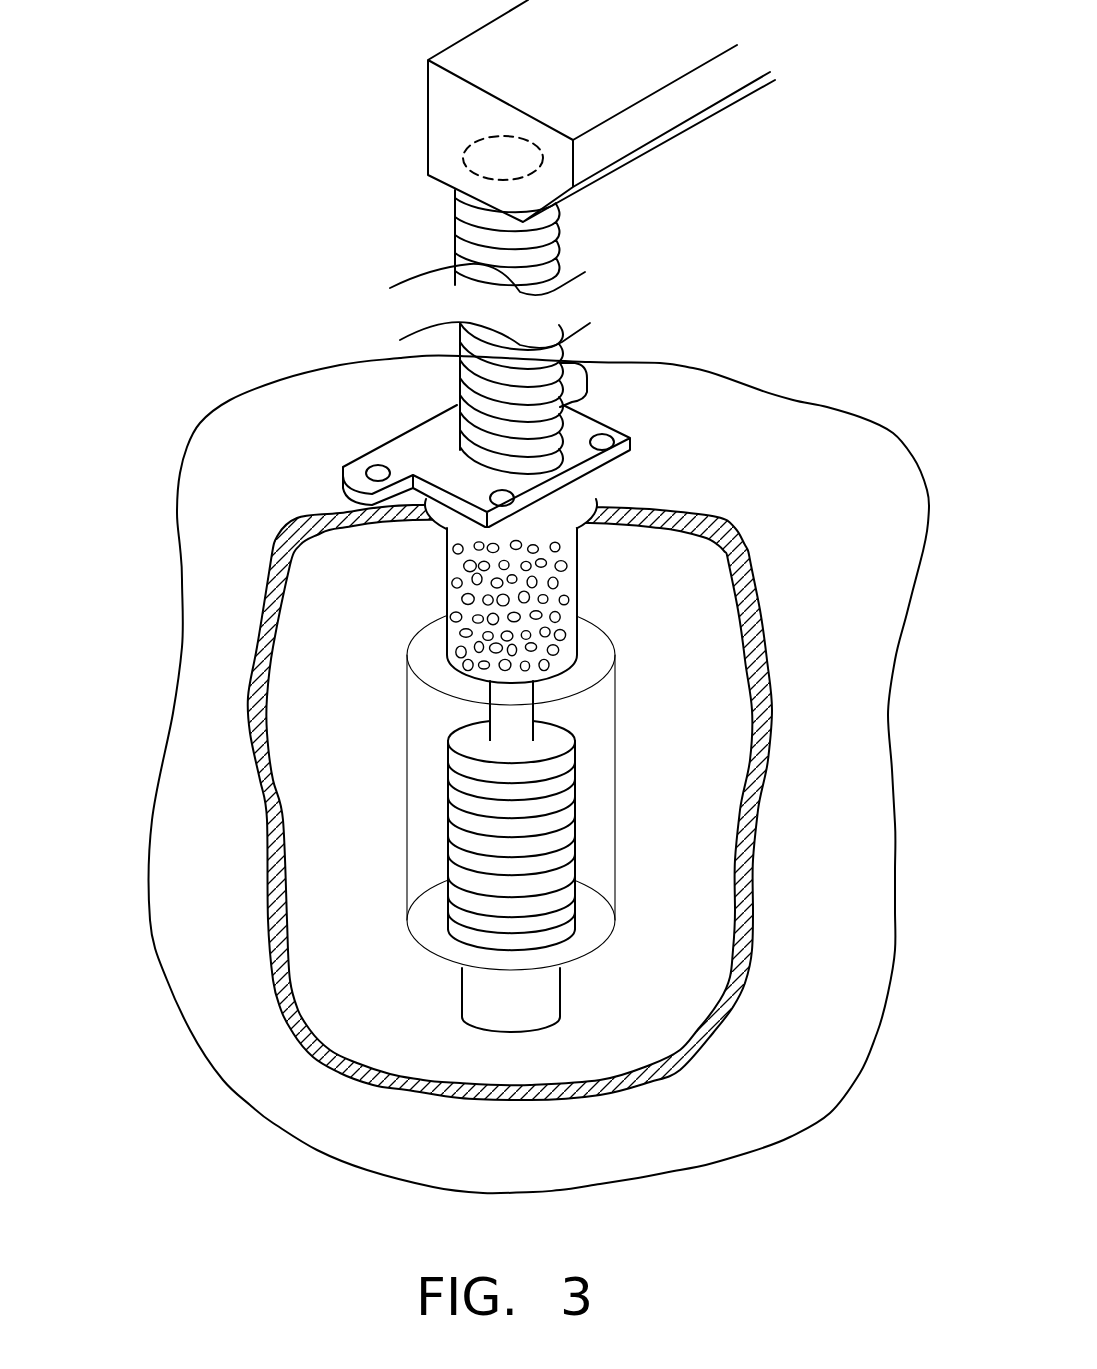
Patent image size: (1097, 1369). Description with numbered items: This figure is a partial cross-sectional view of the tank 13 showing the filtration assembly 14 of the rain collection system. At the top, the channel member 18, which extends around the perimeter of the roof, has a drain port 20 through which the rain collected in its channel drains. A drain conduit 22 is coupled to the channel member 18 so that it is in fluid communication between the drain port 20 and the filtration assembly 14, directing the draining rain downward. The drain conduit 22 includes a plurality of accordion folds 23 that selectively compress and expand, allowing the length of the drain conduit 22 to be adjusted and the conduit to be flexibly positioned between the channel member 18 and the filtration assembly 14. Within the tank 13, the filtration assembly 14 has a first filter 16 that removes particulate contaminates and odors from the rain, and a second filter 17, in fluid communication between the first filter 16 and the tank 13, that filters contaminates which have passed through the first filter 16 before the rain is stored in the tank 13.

The tank 13 is at (222, 578).
The filtration assembly 14 is at (645, 572).
The first filter 16 is at (473, 595).
The second filter 17 is at (473, 855).
The channel member 18 is at (597, 72).
The drain port 20 is at (465, 153).
The drain conduit 22 is at (488, 258).
The accordion folds 23 is at (562, 253).